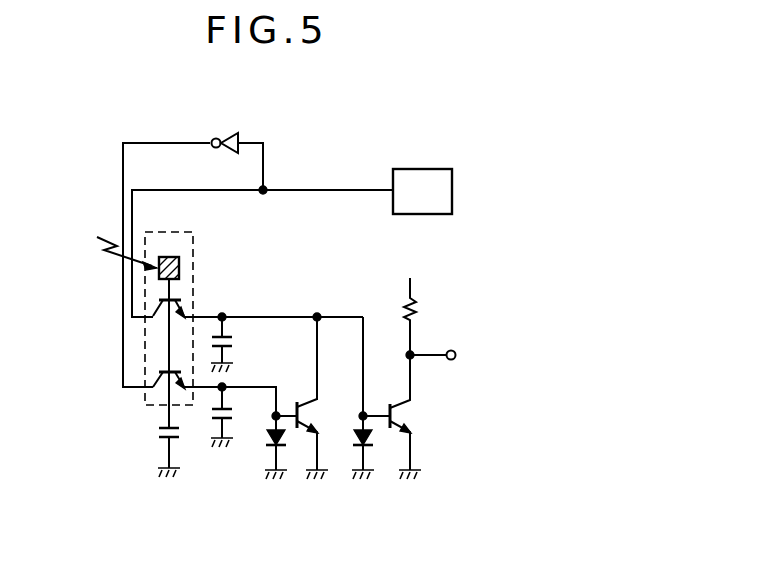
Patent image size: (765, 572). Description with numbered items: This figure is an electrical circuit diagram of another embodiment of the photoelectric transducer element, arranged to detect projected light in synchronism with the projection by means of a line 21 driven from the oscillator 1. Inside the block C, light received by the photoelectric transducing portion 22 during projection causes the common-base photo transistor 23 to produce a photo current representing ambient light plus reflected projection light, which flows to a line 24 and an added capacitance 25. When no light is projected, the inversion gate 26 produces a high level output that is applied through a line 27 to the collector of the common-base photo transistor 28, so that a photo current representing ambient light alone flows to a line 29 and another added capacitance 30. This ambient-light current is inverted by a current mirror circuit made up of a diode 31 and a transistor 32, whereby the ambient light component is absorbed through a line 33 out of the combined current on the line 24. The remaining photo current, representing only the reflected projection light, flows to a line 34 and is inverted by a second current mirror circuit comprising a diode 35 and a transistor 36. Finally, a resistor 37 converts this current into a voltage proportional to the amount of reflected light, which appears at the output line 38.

The oscillator 1 is at (422, 169).
The line 21 is at (287, 188).
The photoelectric transducing portion 22 is at (179, 268).
The photo transistor 23 is at (185, 305).
The line 24 is at (255, 315).
The added capacitance 25 is at (234, 343).
The inversion gate 26 is at (230, 133).
The line 27 is at (127, 388).
The photo transistor 28 is at (165, 405).
The line 29 is at (266, 387).
The added capacitance 30 is at (210, 413).
The diode 31 is at (265, 438).
The transistor 32 is at (315, 416).
The line 33 is at (320, 372).
The line 34 is at (343, 315).
The diode 35 is at (370, 442).
The transistor 36 is at (407, 412).
The resistor 37 is at (417, 312).
The line 38 is at (445, 347).
The block C is at (163, 230).